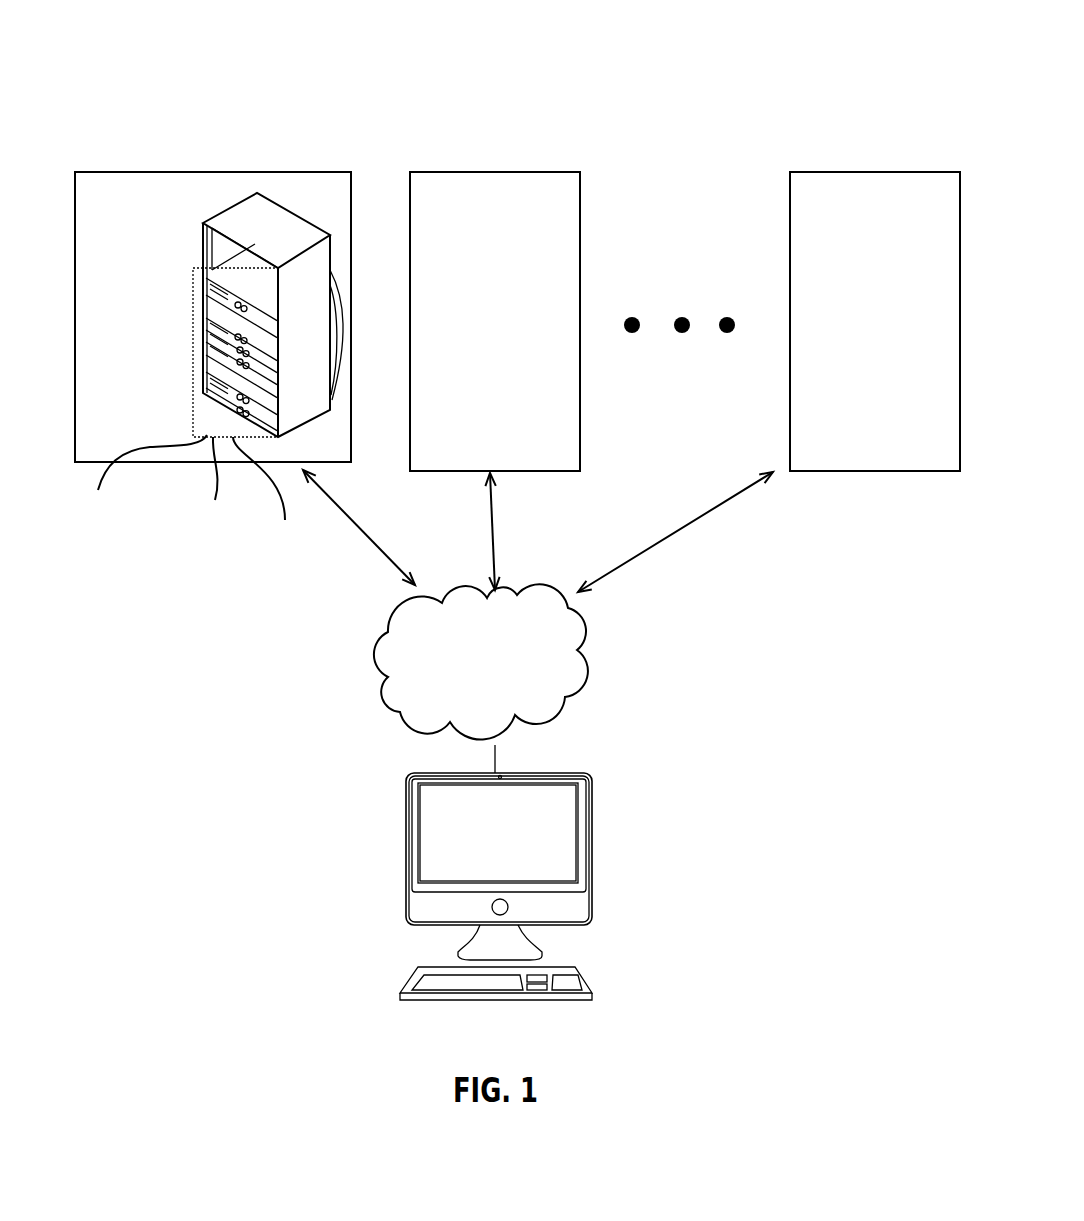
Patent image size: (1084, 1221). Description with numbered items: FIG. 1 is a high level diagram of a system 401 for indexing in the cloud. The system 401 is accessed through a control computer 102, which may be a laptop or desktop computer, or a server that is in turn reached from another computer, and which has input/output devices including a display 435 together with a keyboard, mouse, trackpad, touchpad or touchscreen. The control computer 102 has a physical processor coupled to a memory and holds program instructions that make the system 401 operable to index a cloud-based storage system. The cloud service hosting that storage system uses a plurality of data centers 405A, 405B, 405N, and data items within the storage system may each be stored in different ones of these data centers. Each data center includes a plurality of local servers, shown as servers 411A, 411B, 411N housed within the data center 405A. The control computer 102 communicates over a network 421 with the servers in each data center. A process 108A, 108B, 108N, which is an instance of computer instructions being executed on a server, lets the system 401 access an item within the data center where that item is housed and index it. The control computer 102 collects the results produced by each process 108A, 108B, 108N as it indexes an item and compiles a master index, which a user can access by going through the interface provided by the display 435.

The system 401 is at (498, 55).
The data center 405A is at (170, 172).
The data center 405B is at (518, 172).
The data center 405N is at (817, 172).
The server 411A is at (203, 313).
The server 411B is at (203, 340).
The server 411N is at (203, 392).
The process 108A is at (125, 481).
The process 108B is at (187, 487).
The process 108N is at (274, 495).
The network 421 is at (590, 660).
The control computer 102 is at (590, 840).
The display 435 is at (437, 822).